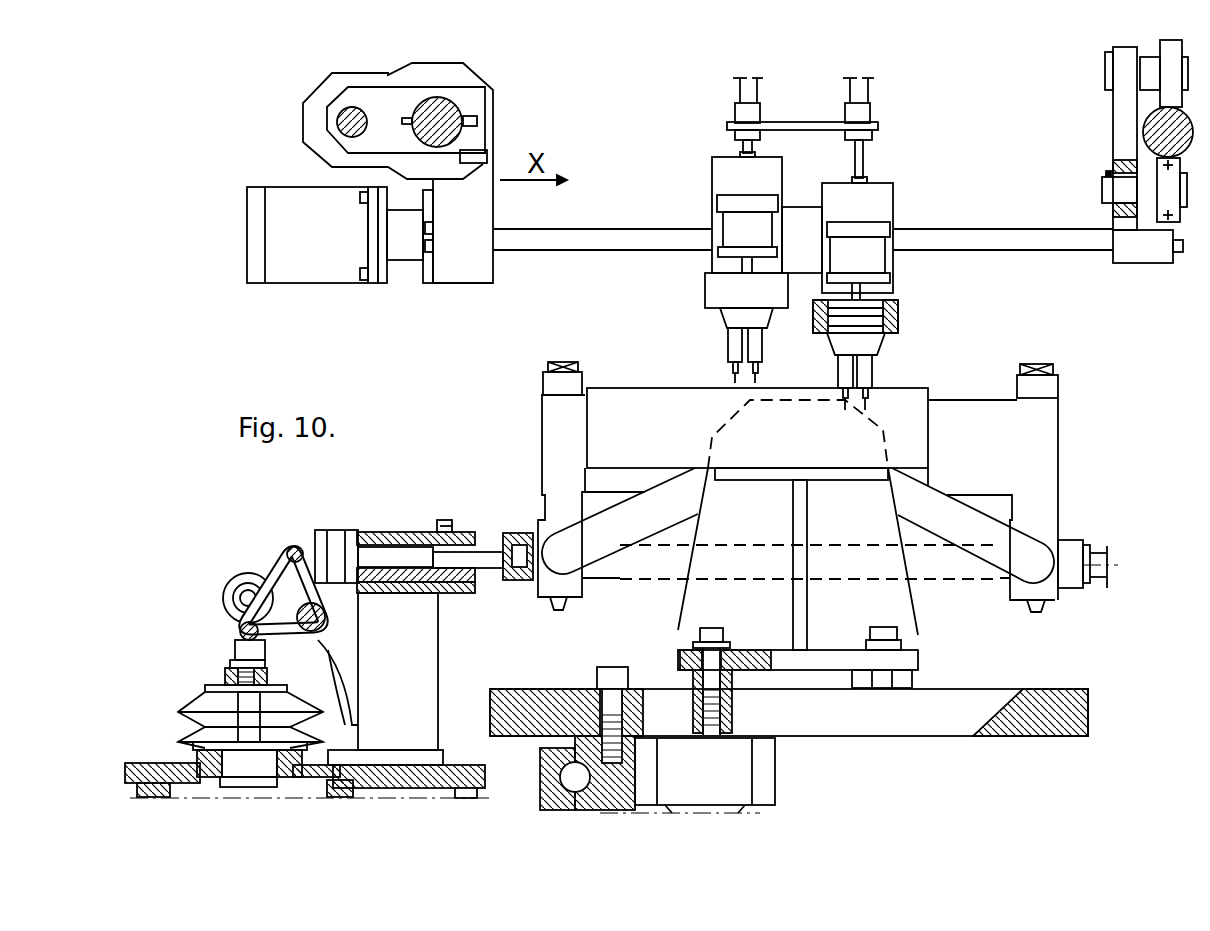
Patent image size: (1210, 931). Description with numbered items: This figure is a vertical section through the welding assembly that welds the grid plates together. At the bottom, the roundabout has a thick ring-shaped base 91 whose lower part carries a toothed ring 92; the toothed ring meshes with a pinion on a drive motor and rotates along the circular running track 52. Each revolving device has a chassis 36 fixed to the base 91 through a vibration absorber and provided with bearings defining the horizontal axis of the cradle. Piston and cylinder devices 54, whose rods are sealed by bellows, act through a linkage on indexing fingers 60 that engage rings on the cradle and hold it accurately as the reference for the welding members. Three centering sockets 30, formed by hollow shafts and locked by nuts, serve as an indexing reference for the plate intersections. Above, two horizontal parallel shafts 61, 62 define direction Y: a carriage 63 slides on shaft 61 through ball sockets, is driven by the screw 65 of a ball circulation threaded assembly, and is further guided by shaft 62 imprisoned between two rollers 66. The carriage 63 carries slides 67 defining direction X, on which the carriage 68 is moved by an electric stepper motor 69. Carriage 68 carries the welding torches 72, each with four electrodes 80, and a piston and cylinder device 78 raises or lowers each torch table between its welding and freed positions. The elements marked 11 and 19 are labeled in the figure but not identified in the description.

The workpiece plate 11 is at (656, 430).
The frame 19 is at (536, 427).
The centering socket 30 is at (552, 383).
The chassis 36 is at (715, 613).
The circular running track 52 is at (555, 757).
The piston and cylinder device 54 is at (228, 788).
The indexing finger 60 is at (490, 558).
The shaft 61 is at (433, 112).
The shaft 62 is at (1162, 125).
The carriage 63 is at (470, 198).
The screw 65 is at (348, 125).
The roller 66 is at (1170, 80).
The slide 67 is at (628, 238).
The carriage 68 is at (808, 218).
The electric stepper motor 69 is at (292, 245).
The welding torch 72 is at (742, 318).
The piston and cylinder device 78 is at (852, 91).
The electrode 80 is at (853, 400).
The base 91 is at (1048, 723).
The toothed ring 92 is at (592, 740).